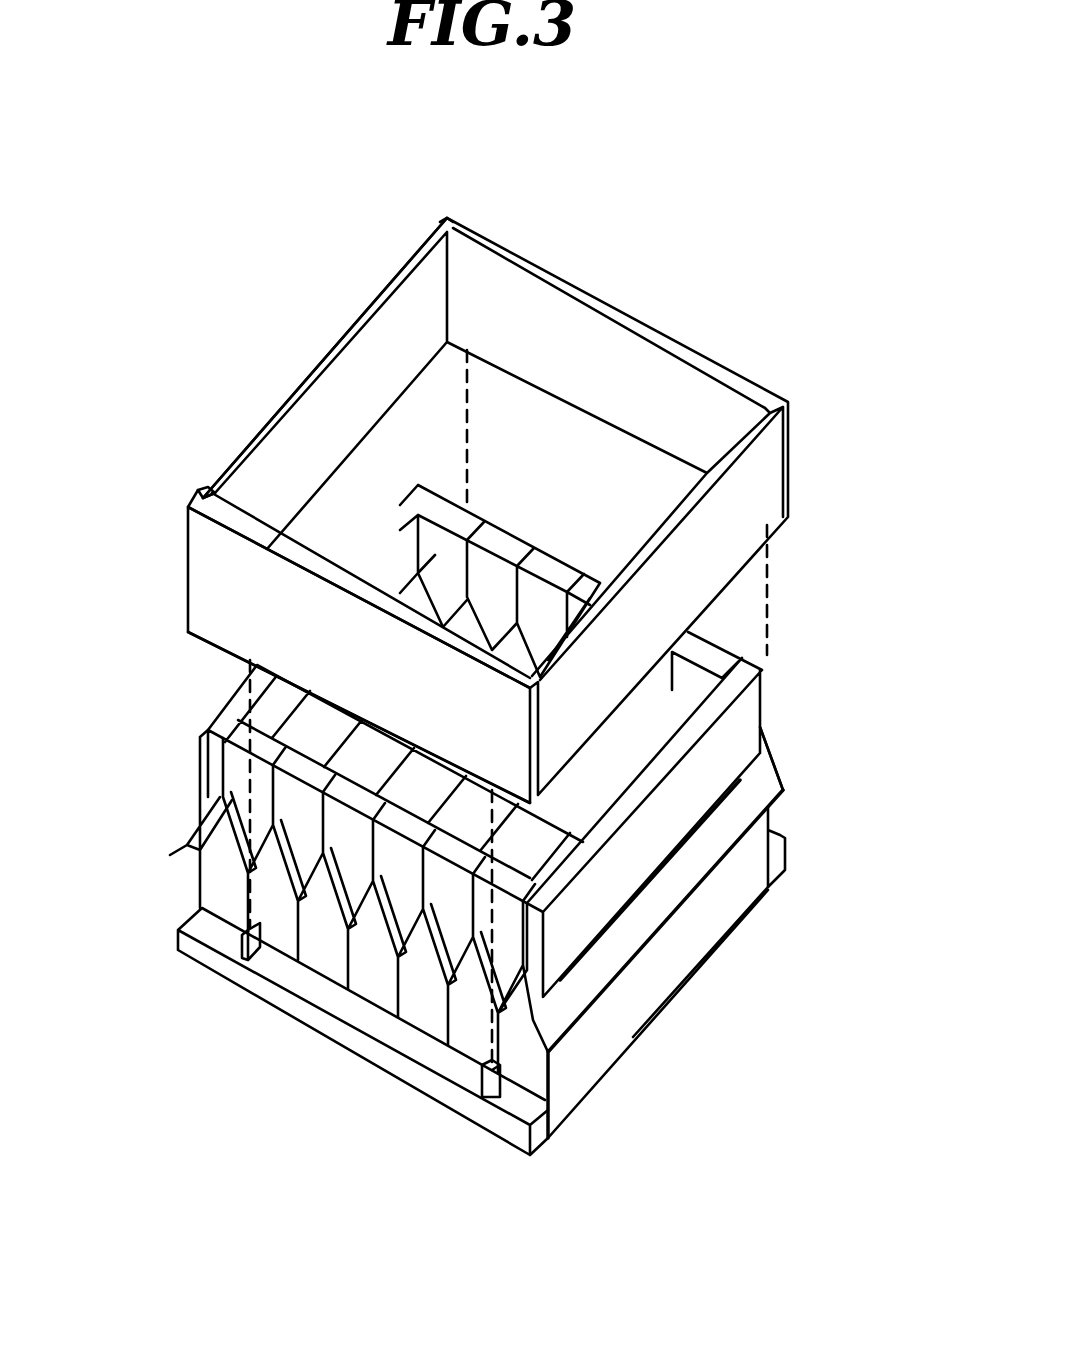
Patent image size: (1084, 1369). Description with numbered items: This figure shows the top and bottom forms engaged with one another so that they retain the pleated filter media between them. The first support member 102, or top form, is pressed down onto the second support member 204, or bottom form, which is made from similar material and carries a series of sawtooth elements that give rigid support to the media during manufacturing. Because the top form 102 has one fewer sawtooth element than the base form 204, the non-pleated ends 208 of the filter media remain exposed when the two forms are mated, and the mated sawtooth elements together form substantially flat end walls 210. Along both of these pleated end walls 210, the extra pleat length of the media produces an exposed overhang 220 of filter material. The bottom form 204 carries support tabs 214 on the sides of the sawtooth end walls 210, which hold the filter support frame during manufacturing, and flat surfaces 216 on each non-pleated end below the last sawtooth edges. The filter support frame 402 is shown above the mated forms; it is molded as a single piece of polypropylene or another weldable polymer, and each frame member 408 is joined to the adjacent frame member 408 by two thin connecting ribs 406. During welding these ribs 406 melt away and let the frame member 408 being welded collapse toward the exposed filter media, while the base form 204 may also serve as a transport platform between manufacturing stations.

The first support member 102 is at (783, 672).
The second support member 204 is at (778, 862).
The non-pleated ends 208 is at (650, 905).
The end walls 210 is at (457, 928).
The support tabs 214 is at (493, 1095).
The flat surfaces 216 is at (603, 1033).
The exposed overhang 220 is at (302, 856).
The filter support frame 402 is at (320, 372).
The connecting ribs 406 is at (450, 337).
The frame member 408 is at (250, 435).